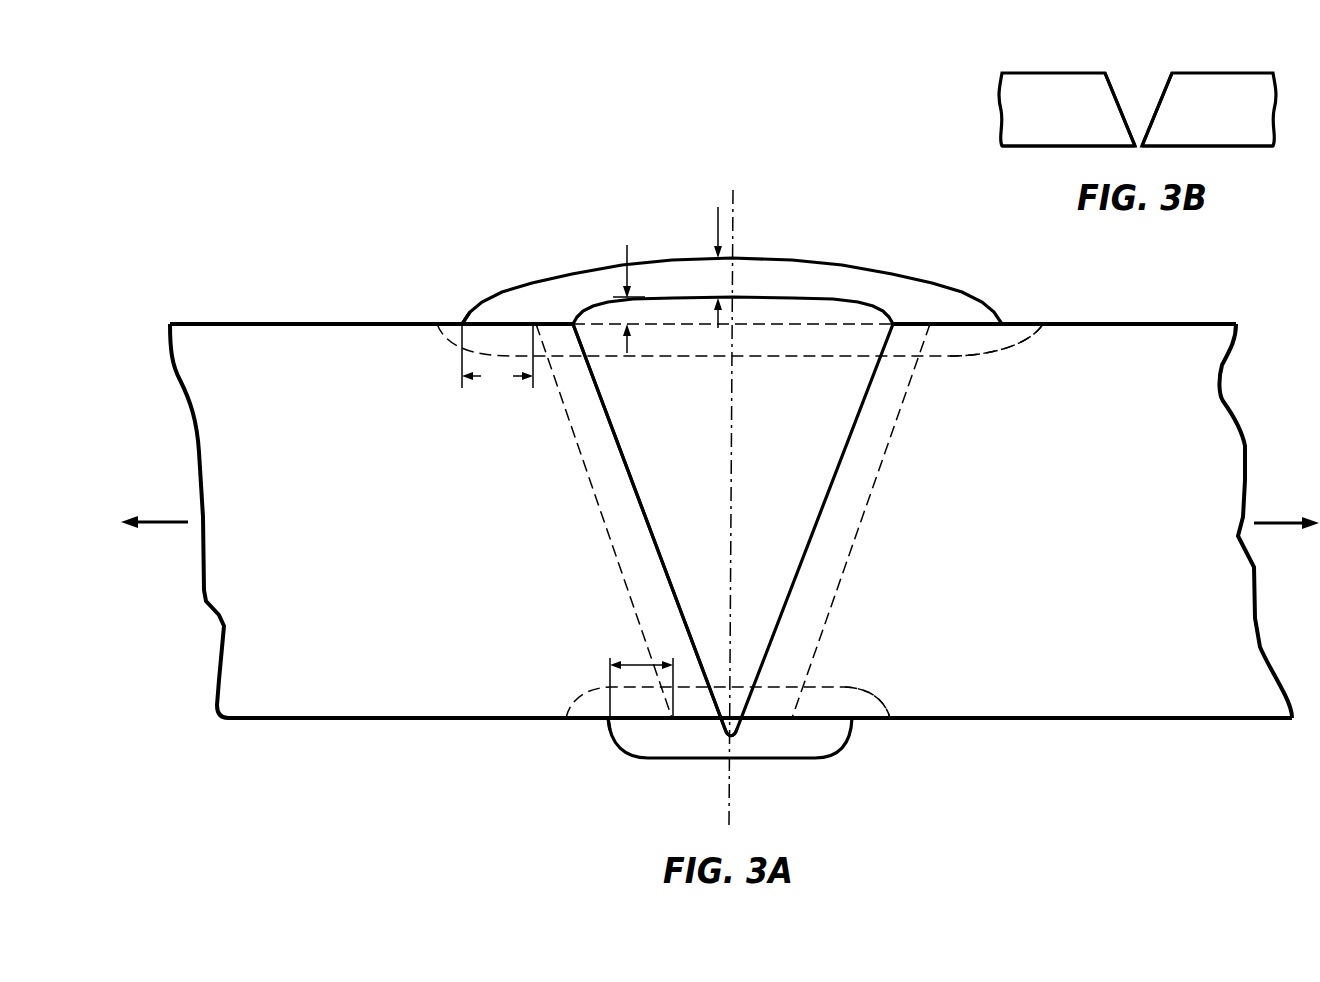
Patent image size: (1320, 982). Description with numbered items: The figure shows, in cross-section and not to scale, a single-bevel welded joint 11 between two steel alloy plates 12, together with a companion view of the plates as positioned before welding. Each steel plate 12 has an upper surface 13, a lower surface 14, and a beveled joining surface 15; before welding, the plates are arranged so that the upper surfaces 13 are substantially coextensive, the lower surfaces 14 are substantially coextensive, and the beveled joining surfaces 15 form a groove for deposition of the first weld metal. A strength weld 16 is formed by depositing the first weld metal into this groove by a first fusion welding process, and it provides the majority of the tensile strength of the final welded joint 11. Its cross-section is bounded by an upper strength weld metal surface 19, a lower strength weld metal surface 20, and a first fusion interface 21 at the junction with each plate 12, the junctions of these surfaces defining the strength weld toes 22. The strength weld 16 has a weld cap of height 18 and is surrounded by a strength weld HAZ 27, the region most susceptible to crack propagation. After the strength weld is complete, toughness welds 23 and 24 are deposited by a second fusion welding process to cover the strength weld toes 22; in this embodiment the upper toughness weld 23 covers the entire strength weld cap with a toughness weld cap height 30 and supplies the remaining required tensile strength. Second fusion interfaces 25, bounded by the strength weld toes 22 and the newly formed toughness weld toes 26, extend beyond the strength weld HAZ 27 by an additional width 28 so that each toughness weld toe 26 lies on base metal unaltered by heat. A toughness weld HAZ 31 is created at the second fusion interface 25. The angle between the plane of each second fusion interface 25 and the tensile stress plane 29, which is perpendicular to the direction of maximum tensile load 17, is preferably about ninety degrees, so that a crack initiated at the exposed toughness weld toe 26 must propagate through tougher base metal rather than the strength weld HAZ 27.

In FIG. 3A, the welded joint 11 is at (471, 213).
In FIG. 3A, the steel alloy plate 12 is at (368, 323).
In FIG. 3A, the upper surface 13 is at (252, 322).
In FIG. 3B, the upper surface 13 is at (1048, 73).
In FIG. 3A, the lower surface 14 is at (358, 720).
In FIG. 3B, the lower surface 14 is at (1048, 146).
In FIG. 3B, the beveled joining surface 15 is at (1164, 80).
In FIG. 3A, the strength weld 16 is at (845, 343).
In FIG. 3A, the direction of maximum tensile load 17 is at (172, 525).
In FIG. 3A, the strength weld cap height 18 is at (628, 247).
In FIG. 3A, the upper strength weld metal surface 19 is at (785, 298).
In FIG. 3A, the lower strength weld metal surface 20 is at (736, 732).
In FIG. 3A, the first fusion interface 21 is at (880, 380).
In FIG. 3A, the strength weld toe 22 is at (580, 388).
In FIG. 3A, the toughness weld 23 is at (962, 306).
In FIG. 3A, the toughness weld 24 is at (807, 748).
In FIG. 3A, the second fusion interface 25 is at (488, 330).
In FIG. 3A, the toughness weld toe 26 is at (458, 322).
In FIG. 3A, the strength weld HAZ 27 is at (547, 357).
In FIG. 3A, the additional width 28 is at (618, 665).
In FIG. 3A, the tensile stress plane 29 is at (737, 215).
In FIG. 3A, the toughness weld cap height 30 is at (718, 221).
In FIG. 3A, the toughness weld HAZ 31 is at (1025, 330).